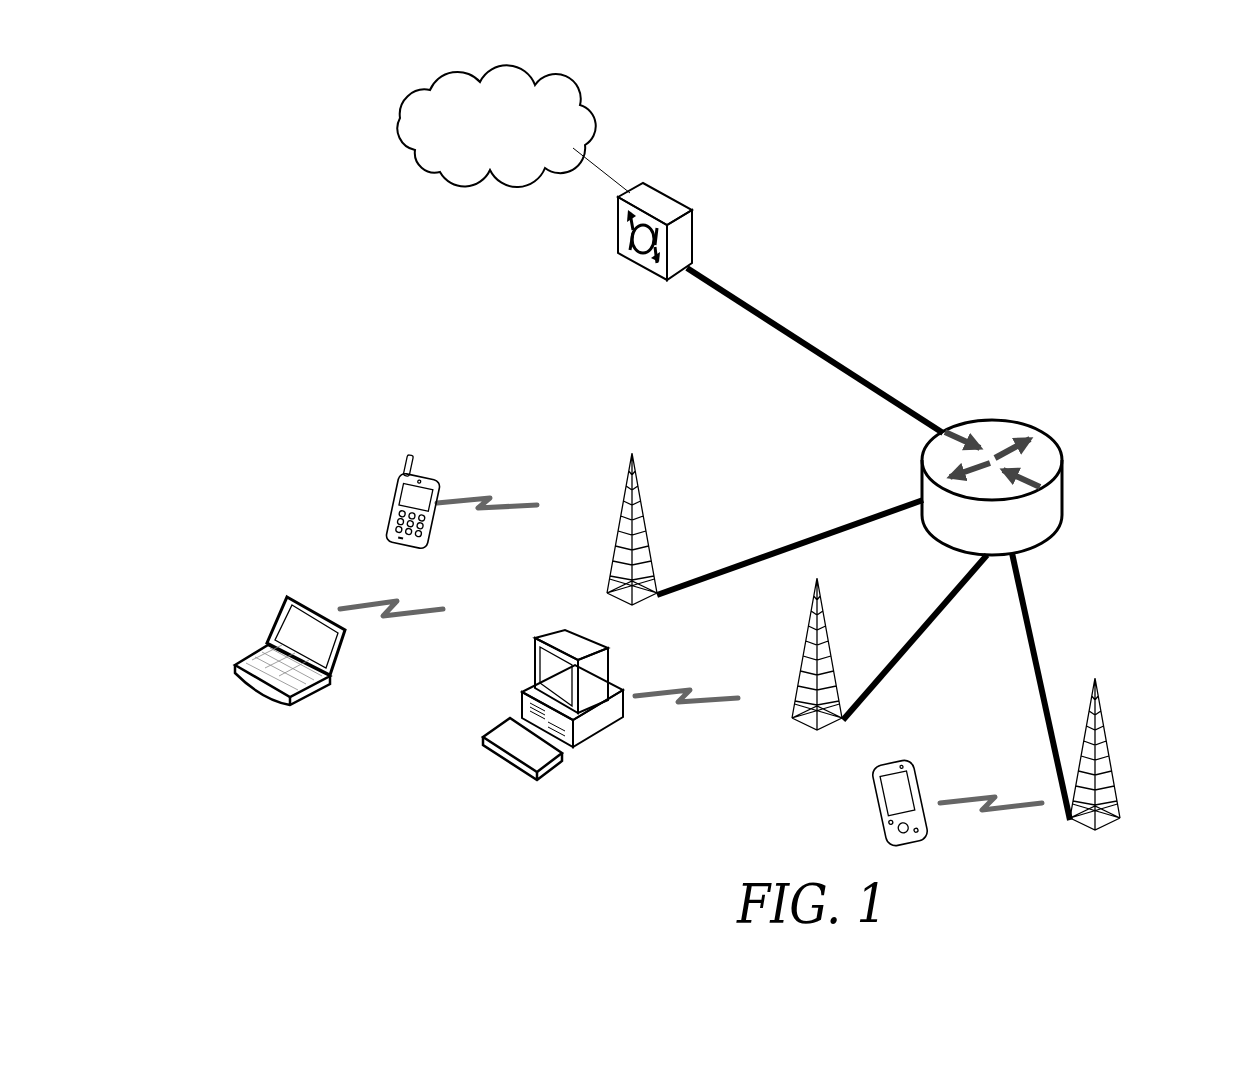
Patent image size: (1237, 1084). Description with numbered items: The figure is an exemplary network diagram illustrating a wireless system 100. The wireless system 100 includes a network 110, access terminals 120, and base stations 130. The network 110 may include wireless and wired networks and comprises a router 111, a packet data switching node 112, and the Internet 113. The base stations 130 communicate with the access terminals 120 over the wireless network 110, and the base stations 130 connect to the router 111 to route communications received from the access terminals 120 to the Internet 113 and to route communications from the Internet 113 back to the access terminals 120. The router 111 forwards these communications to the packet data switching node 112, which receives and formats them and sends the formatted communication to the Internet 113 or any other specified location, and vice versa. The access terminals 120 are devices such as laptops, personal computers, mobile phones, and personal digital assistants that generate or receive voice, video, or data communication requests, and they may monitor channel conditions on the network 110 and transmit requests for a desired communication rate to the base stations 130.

The wireless system 100 is at (1154, 135).
The network 110 is at (830, 356).
The router 111 is at (1013, 421).
The packet data switching node 112 is at (686, 206).
The Internet 113 is at (513, 129).
The access terminals 120 is at (396, 455).
The base stations 130 is at (645, 506).